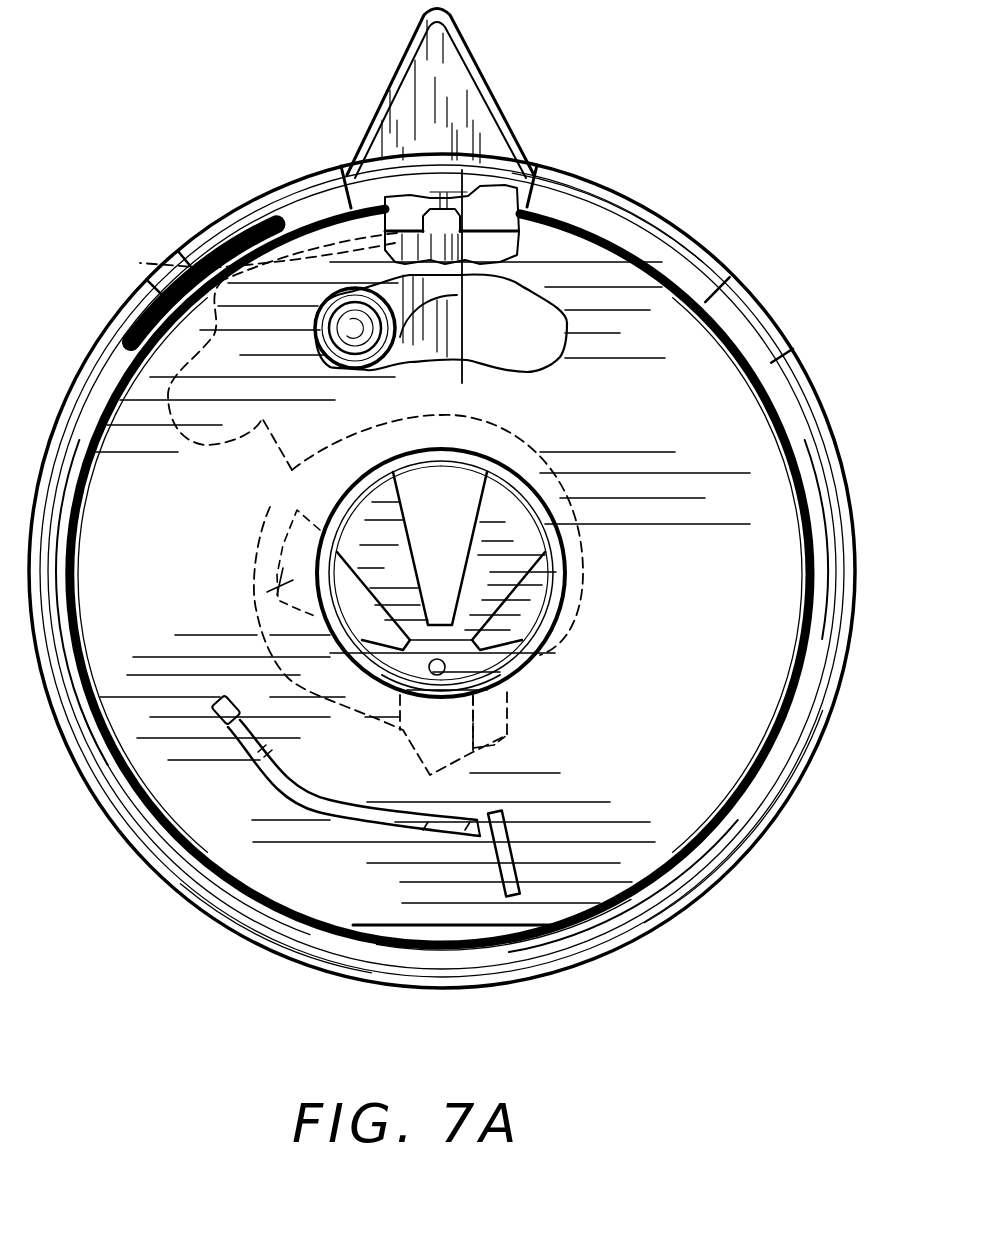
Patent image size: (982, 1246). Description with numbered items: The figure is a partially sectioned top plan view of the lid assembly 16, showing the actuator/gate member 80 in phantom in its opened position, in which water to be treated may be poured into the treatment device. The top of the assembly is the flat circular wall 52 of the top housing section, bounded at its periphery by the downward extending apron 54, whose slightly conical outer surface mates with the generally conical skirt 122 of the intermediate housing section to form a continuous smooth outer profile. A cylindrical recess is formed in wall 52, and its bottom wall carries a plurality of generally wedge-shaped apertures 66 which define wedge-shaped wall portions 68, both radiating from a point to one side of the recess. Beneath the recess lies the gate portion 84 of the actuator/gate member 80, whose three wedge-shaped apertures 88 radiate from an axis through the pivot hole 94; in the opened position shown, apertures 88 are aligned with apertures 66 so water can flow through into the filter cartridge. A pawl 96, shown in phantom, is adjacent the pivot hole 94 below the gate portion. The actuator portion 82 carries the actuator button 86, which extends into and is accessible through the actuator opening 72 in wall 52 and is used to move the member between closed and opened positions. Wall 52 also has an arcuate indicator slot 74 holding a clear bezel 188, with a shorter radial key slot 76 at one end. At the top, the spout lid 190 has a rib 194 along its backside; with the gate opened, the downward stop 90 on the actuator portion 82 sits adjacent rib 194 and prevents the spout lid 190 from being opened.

The lid assembly 16 is at (718, 207).
The flat circular wall 52 is at (722, 663).
The apron 54 is at (621, 228).
The wedge-shaped apertures 66 is at (458, 507).
The wedge-shaped wall portions 68 is at (382, 542).
The actuator opening 72 is at (555, 330).
The indicator slot 74 is at (286, 792).
The key slot 76 is at (518, 853).
The actuator/gate member 80 is at (258, 453).
The actuator portion 82 is at (422, 300).
The gate portion 84 is at (257, 553).
The actuator button 86 is at (450, 334).
The wedge-shaped apertures 88 is at (458, 549).
The stop 90 is at (458, 212).
The pivot hole 94 is at (404, 702).
The pawl 96 is at (522, 724).
The skirt 122 is at (782, 358).
The clear bezel 188 is at (222, 697).
The spout lid 190 is at (503, 50).
The rib 194 is at (398, 184).